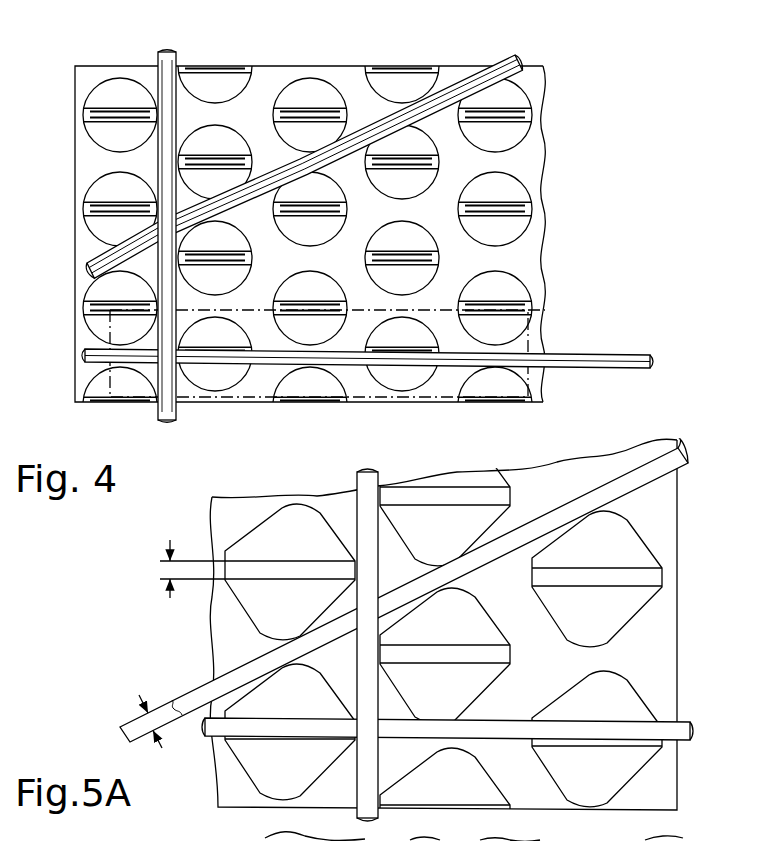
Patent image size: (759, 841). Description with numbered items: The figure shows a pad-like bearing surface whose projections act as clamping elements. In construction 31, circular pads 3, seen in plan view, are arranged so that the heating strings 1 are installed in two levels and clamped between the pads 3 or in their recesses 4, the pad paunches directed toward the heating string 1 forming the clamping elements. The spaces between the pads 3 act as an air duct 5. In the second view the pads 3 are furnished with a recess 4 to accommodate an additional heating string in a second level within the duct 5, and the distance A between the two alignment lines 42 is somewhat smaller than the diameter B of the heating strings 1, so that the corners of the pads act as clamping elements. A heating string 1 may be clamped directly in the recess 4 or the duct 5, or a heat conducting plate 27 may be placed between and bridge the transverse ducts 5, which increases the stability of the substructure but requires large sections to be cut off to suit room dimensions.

In FIG. 4, the heating string 1 is at (162, 54).
In FIG. 5A, the heating string 1 is at (357, 480).
In FIG. 4, the pad 3 is at (520, 233).
In FIG. 5A, the pad 3 is at (292, 508).
In FIG. 4, the recess 4 is at (525, 122).
In FIG. 5A, the recess 4 is at (645, 577).
In FIG. 4, the air duct 5 is at (505, 166).
In FIG. 5A, the air duct 5 is at (601, 830).
In FIG. 4, the heat conducting plate 27 is at (98, 380).
In FIG. 4, the construction 31 is at (540, 313).
In FIG. 5A, the construction 31 is at (216, 638).
In FIG. 5A, the alignment line 42 is at (193, 560).